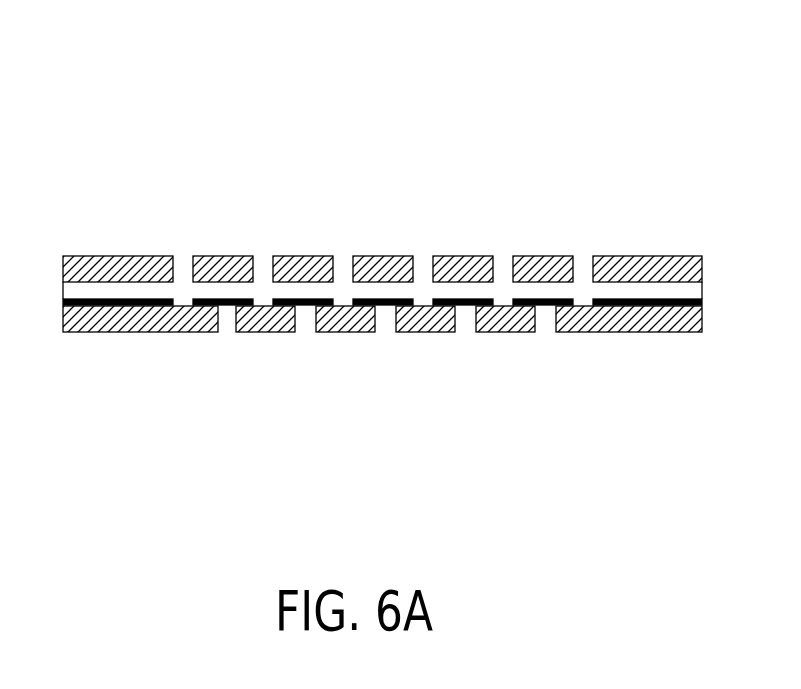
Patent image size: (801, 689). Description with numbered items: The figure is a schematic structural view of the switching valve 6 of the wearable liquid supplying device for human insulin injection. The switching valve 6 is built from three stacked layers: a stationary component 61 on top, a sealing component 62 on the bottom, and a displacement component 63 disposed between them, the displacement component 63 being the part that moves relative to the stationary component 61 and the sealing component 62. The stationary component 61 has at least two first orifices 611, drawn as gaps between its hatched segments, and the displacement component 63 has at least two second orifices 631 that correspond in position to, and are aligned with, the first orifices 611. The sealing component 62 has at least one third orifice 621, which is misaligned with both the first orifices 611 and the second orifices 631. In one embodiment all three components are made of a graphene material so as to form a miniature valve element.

The switching valve 6 is at (768, 17).
The stationary component 61 is at (698, 272).
The first orifices 611 is at (580, 272).
The sealing component 62 is at (697, 328).
The third orifice 621 is at (546, 318).
The displacement component 63 is at (703, 301).
The second orifices 631 is at (585, 300).